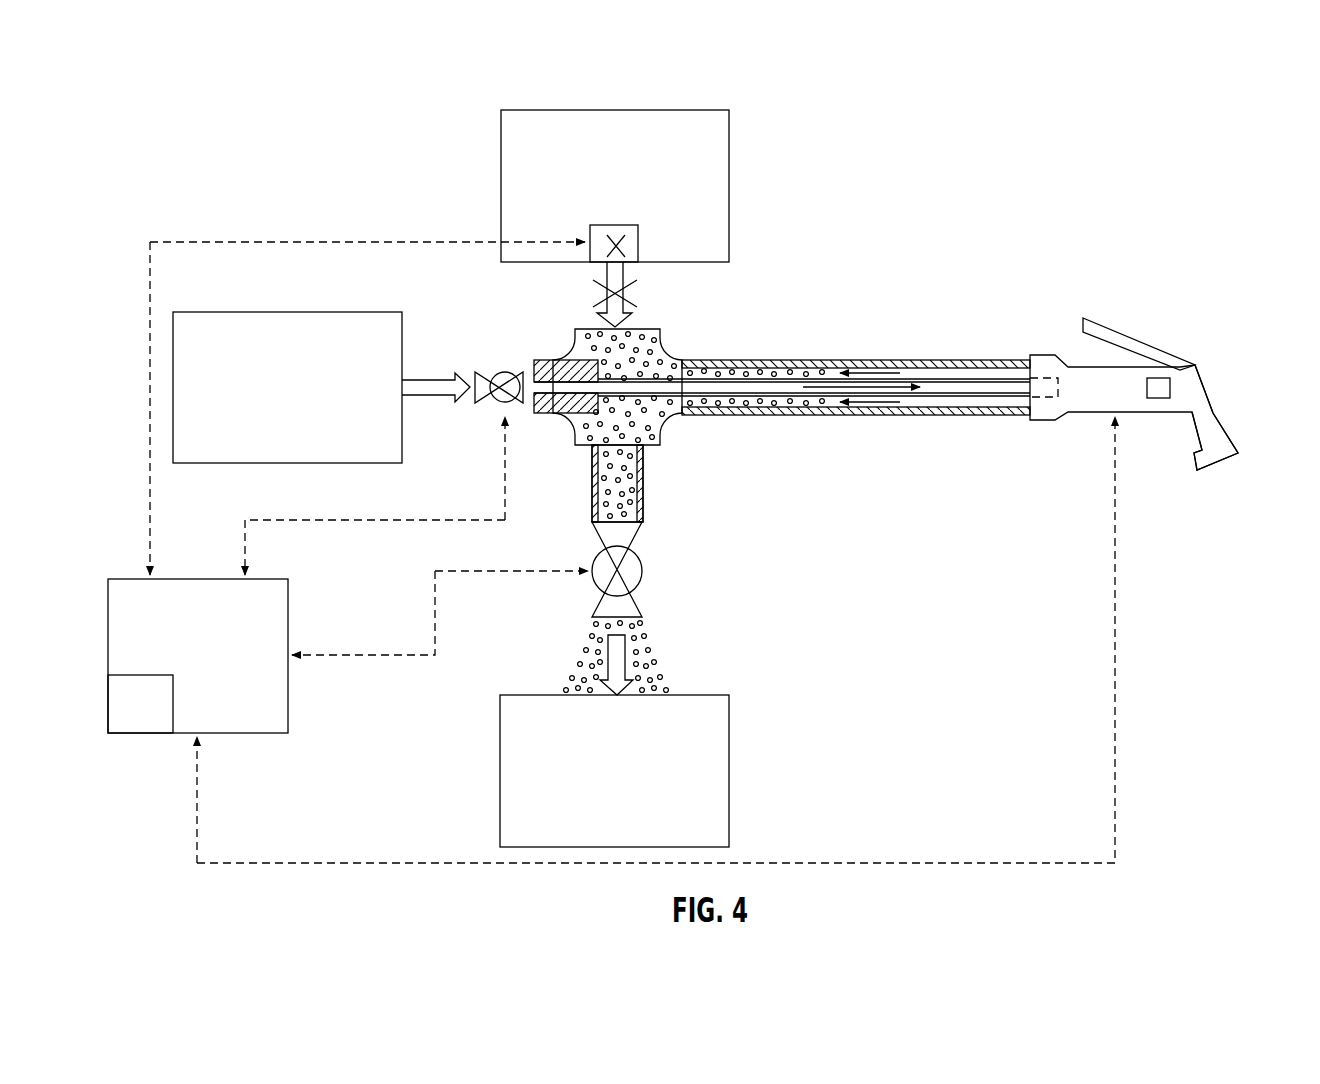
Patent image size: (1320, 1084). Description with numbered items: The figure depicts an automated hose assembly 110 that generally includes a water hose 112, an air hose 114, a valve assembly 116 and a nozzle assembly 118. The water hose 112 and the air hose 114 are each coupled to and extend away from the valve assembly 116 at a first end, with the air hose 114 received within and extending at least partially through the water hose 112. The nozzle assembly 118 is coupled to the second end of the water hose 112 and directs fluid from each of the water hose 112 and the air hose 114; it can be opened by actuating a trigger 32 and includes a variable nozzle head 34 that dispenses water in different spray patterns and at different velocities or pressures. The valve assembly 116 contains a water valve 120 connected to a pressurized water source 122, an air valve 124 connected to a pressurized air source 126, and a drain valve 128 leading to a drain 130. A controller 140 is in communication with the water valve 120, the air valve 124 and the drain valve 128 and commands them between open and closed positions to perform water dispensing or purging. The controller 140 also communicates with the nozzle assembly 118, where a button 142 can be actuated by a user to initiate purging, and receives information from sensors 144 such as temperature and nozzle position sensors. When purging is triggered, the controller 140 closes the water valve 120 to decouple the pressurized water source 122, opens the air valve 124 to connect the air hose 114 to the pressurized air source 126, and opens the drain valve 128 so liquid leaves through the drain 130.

The automated hose assembly 110 is at (1073, 115).
The water hose 112 is at (875, 360).
The air hose 114 is at (783, 397).
The valve assembly 116 is at (556, 451).
The nozzle assembly 118 is at (1163, 375).
The water valve 120 is at (638, 242).
The pressurized water source 122 is at (683, 110).
The air valve 124 is at (507, 372).
The pressurized air source 126 is at (348, 311).
The drain valve 128 is at (643, 571).
The drain 130 is at (677, 695).
The controller 140 is at (290, 602).
The button 142 is at (1157, 400).
The sensors 144 is at (164, 717).
The trigger 32 is at (1133, 335).
The variable nozzle head 34 is at (1230, 443).